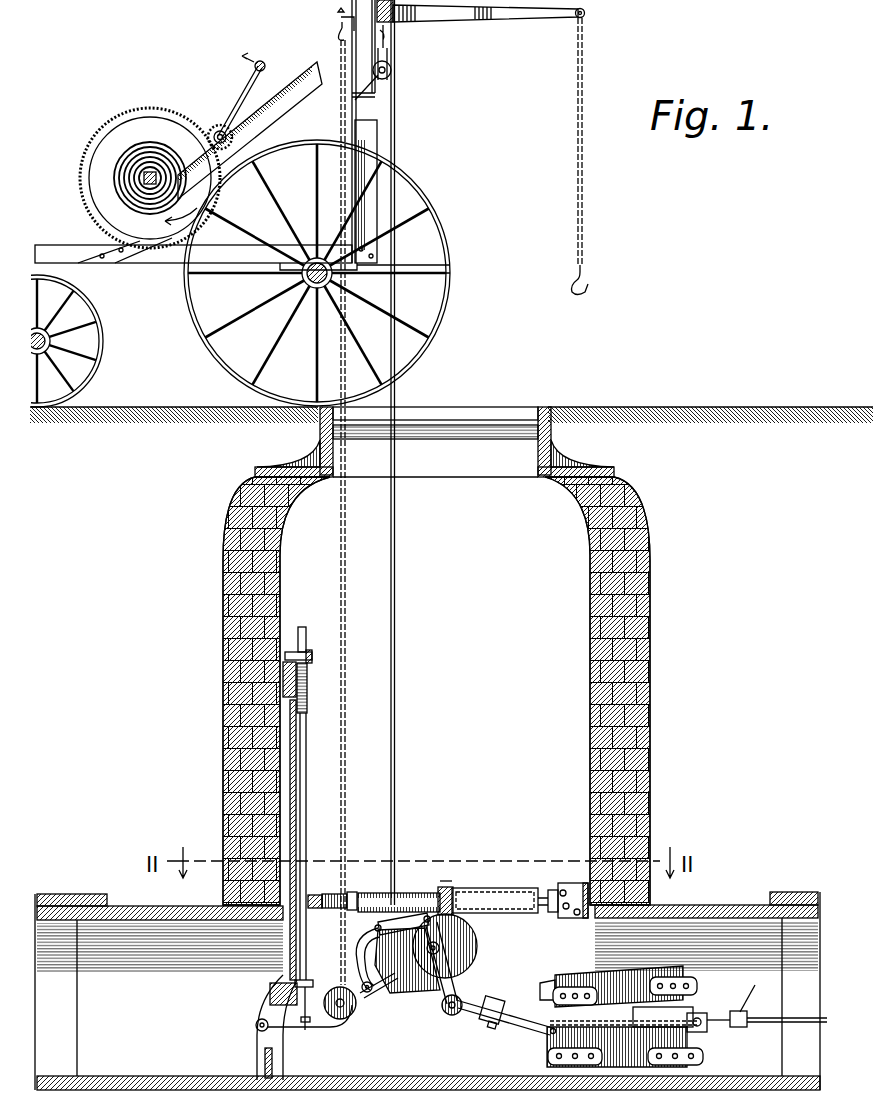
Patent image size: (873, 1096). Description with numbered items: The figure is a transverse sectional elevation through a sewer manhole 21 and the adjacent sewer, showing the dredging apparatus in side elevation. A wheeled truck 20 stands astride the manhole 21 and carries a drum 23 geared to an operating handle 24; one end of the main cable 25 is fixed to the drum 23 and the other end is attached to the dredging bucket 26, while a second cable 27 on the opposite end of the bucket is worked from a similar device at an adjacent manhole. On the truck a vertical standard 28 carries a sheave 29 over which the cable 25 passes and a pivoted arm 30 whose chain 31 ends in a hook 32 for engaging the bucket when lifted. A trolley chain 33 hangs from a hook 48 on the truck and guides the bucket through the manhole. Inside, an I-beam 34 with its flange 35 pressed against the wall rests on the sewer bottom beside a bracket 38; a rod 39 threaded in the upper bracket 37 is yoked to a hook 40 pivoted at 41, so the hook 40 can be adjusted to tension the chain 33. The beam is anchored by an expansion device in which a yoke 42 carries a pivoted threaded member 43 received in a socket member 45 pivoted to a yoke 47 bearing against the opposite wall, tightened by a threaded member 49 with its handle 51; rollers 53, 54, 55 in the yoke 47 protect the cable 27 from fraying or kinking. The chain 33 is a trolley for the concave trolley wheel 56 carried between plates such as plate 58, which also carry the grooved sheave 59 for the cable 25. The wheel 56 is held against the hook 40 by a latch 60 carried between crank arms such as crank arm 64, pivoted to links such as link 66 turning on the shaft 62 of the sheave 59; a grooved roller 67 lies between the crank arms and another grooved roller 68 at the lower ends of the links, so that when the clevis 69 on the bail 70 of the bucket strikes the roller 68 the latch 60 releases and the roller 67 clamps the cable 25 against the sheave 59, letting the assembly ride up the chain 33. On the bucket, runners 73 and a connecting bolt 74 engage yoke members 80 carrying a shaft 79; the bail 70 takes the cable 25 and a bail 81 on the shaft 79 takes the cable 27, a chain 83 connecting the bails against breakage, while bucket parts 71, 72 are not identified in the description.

The wheeled truck 20 is at (147, 263).
The manhole 21 is at (463, 470).
The drum 23 is at (148, 135).
The operating handle 24 is at (247, 85).
The main cable 25 is at (284, 100).
The dredging bucket 26 is at (585, 977).
The cable 27 is at (787, 1026).
The vertical standard 28 is at (372, 132).
The sheave 29 is at (393, 68).
The pivoted arm 30 is at (478, 16).
The chain 31 is at (576, 133).
The hook 32 is at (588, 283).
The trolley chain 33 is at (338, 56).
The I-beam 34 is at (300, 716).
The flange 35 is at (285, 1050).
The bracket 37 is at (296, 645).
The bracket 38 is at (307, 978).
The rod 39 is at (306, 766).
The hook 40 is at (332, 1030).
The pivot 41 is at (256, 1028).
The yoke 42 is at (316, 895).
The exteriorly threaded member 43 is at (410, 893).
The plain socket member 45 is at (500, 891).
The yoke 47 is at (577, 889).
The hook 48 is at (340, 24).
The threaded member 49 is at (445, 880).
The handle 51 is at (459, 888).
The roller 53 is at (554, 889).
The roller 54 is at (562, 912).
The roller 55 is at (577, 918).
The concave trolley wheel 56 is at (336, 988).
The plate 58 is at (404, 994).
The grooved sheave 59 is at (472, 935).
The latch 60 is at (367, 997).
The shaft 62 is at (440, 950).
The crank arm 64 is at (378, 1003).
The link 66 is at (462, 980).
The grooved roller 67 is at (378, 922).
The grooved roller 68 is at (455, 1016).
The clevis 69 is at (494, 1030).
The bail 70 is at (523, 1027).
The upper track 71 is at (619, 986).
The lower track 72 is at (617, 1047).
The runners 73 is at (553, 991).
The connecting bolt 74 is at (663, 1009).
The shaft 79 is at (755, 985).
The yoke members 80 is at (706, 1030).
The bail 81 is at (737, 1011).
The chain 83 is at (598, 1021).